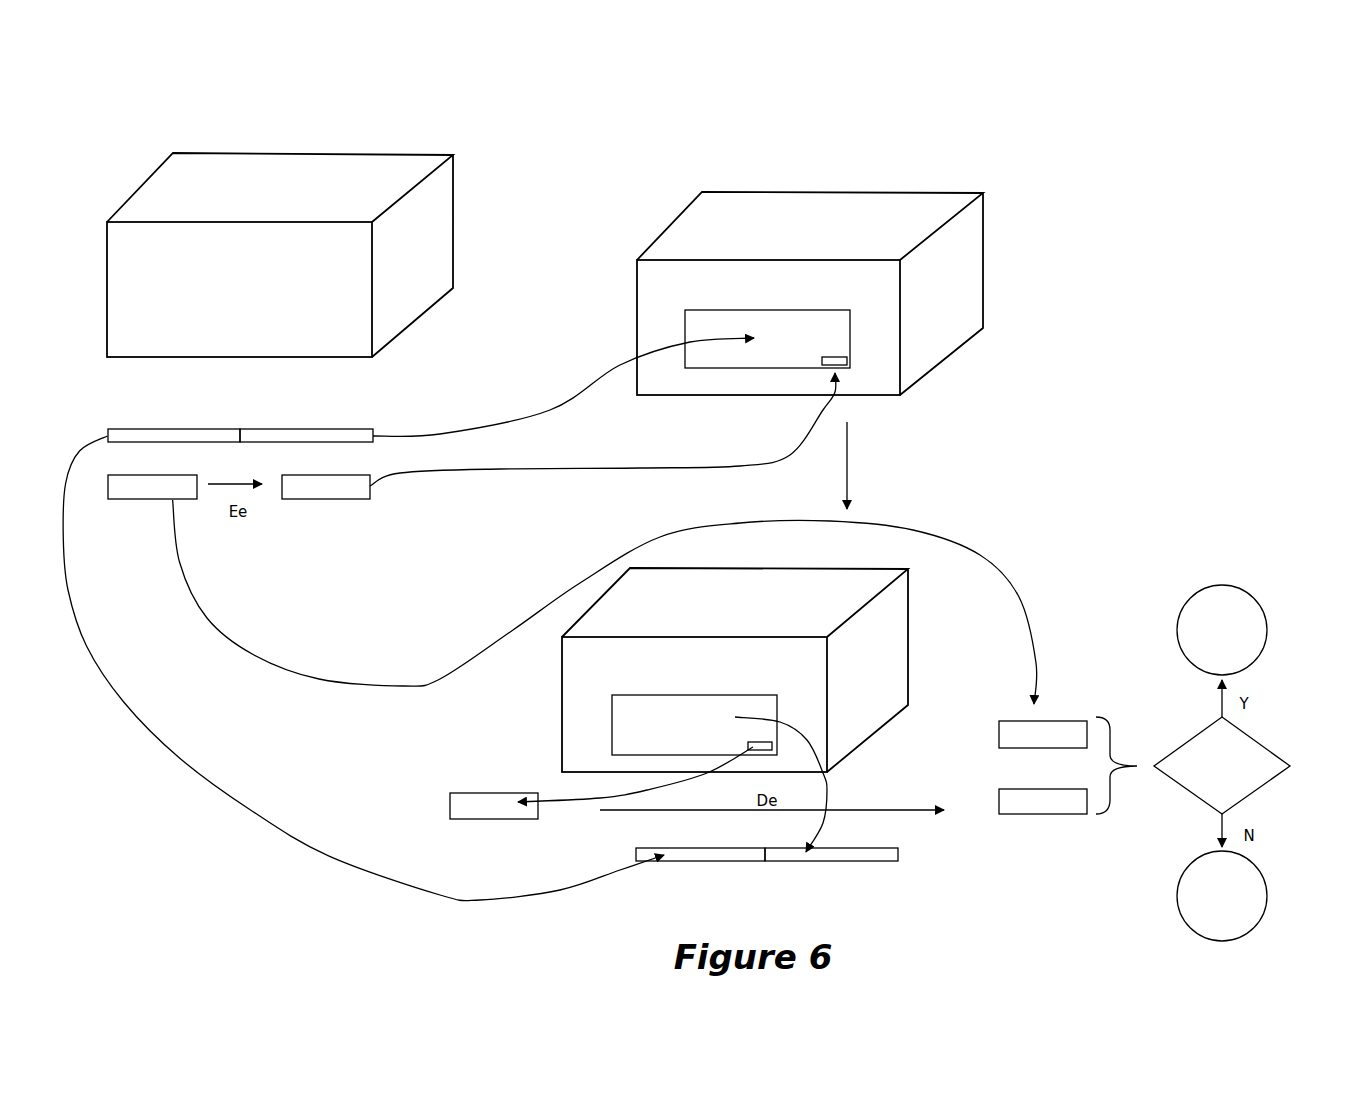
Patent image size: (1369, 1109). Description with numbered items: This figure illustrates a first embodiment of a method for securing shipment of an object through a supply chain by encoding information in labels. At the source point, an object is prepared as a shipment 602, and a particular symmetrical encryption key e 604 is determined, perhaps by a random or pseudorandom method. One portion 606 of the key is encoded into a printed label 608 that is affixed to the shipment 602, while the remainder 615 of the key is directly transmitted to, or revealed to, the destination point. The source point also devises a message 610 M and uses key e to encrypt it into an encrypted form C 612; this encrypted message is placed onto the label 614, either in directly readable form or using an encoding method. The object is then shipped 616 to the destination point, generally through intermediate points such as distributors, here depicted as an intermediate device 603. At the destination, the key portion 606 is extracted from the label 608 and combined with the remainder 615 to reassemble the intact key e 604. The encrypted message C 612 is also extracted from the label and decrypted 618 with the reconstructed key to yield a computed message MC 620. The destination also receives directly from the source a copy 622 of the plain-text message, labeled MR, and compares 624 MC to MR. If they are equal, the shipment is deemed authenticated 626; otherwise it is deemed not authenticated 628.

The shipment 602 is at (372, 153).
The relay / intermediate device 603 is at (855, 275).
The symmetrical encryption key e 604 is at (485, 646).
The portion of the symmetrical encryption key 606 is at (323, 432).
The printed label 608 is at (822, 275).
The message M 610 is at (123, 483).
The encrypted form C 612 is at (305, 487).
The label placement of encrypted message 614 is at (842, 363).
The remainder of the encryption key e 615 is at (137, 433).
The shipping 616 is at (847, 483).
The decryption 618 is at (825, 788).
The computed version of the original message MC 620 is at (1069, 816).
The copy of the plain-text message MR 622 is at (1069, 717).
The comparison 624 is at (1251, 735).
The authenticated result 626 is at (1222, 586).
The not authenticated result 628 is at (1267, 892).